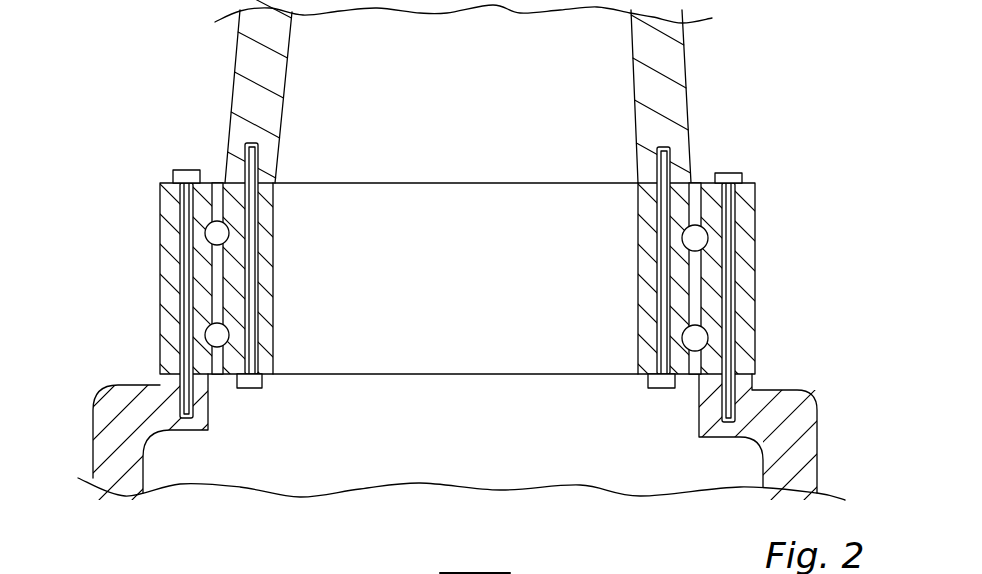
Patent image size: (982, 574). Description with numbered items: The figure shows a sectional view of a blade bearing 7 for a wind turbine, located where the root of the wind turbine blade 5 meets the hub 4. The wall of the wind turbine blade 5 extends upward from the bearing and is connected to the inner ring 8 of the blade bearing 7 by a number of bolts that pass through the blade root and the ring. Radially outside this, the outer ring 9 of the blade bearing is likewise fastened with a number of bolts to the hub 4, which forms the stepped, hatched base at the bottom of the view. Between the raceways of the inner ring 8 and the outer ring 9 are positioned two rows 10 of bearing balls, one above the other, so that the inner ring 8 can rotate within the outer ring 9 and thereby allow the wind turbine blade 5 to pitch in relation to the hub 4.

The hub 4 is at (773, 410).
The wind turbine blade 5 is at (645, 80).
The blade bearing 7 is at (748, 140).
The inner ring 8 is at (680, 307).
The outer ring 9 is at (713, 248).
The rows of bearing balls 10 is at (212, 235).